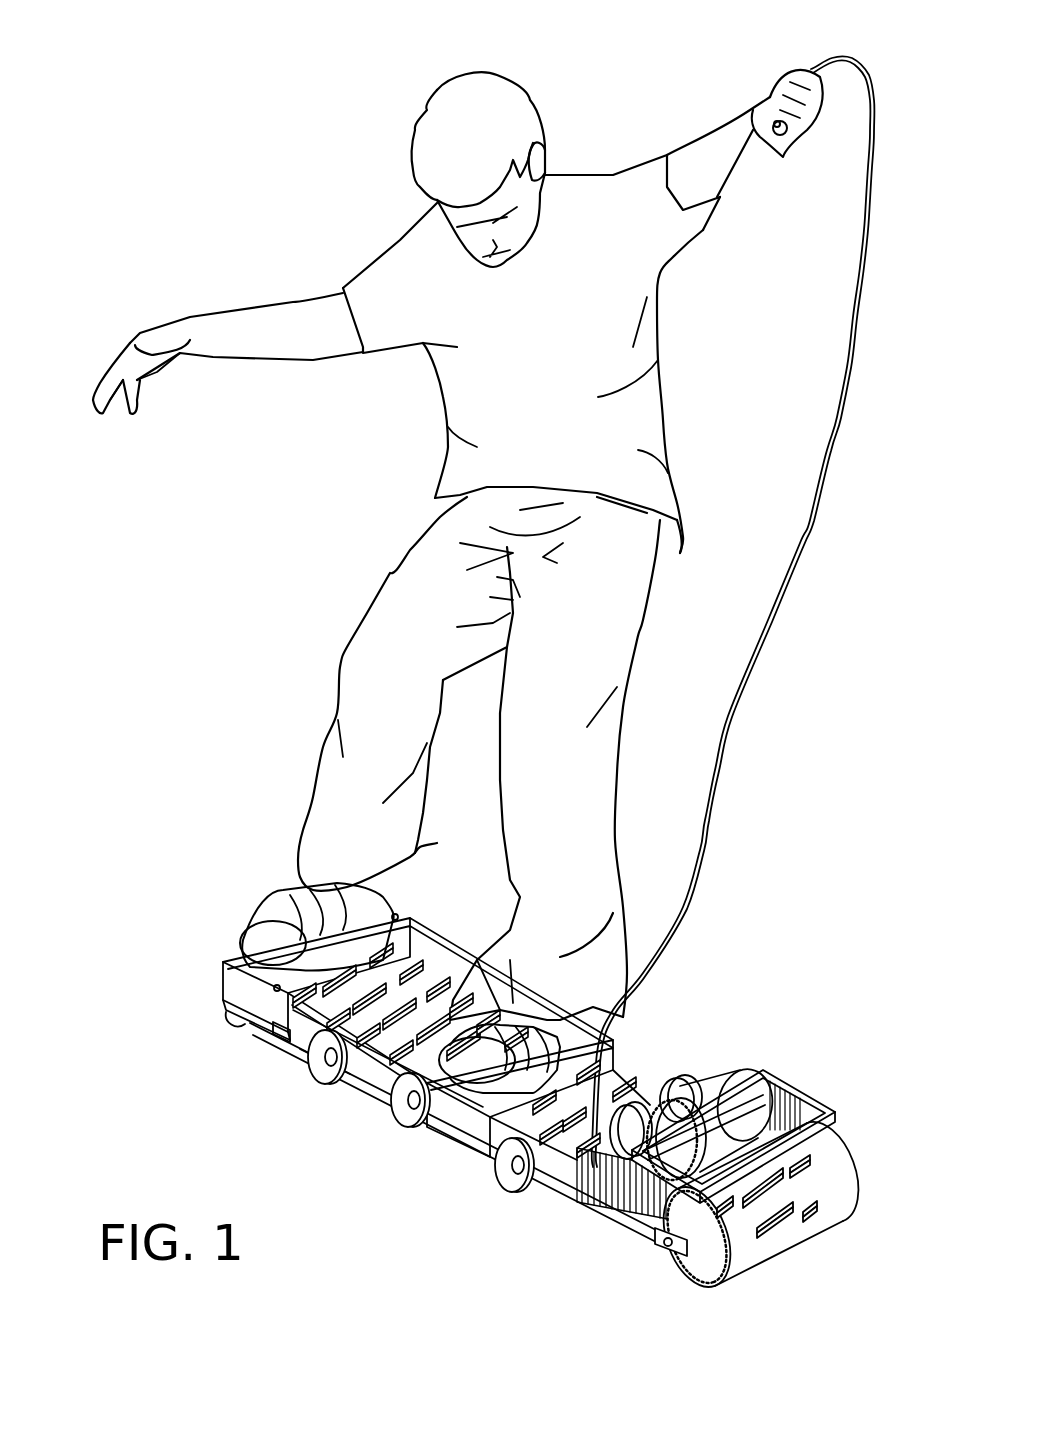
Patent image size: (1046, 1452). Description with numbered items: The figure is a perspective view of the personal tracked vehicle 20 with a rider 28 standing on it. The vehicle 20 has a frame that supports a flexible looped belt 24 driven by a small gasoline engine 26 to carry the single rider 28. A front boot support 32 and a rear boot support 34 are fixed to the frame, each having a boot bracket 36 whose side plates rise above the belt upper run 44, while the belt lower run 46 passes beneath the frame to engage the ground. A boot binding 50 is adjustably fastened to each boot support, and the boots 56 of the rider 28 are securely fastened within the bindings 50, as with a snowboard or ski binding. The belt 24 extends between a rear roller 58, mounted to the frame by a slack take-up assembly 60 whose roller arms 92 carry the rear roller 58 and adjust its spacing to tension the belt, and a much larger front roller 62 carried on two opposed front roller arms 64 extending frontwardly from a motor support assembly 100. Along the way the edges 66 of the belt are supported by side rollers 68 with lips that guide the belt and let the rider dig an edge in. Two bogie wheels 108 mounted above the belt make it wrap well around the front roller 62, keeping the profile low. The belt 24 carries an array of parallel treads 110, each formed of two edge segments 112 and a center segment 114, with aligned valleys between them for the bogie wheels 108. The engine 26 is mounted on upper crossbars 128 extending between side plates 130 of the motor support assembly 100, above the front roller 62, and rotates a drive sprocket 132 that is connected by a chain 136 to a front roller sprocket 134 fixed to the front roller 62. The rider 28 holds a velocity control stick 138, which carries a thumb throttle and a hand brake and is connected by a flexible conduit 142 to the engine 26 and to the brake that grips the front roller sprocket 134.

The personal tracked vehicle 20 is at (128, 980).
The flexible looped belt 24 is at (462, 1017).
The gasoline engine 26 is at (711, 1153).
The rider 28 is at (597, 93).
The front boot support 32 is at (462, 1140).
The rear boot support 34 is at (222, 962).
The boot bracket 36 is at (267, 1033).
The belt upper run 44 is at (437, 977).
The belt lower run 46 is at (345, 1090).
The boot binding 50 is at (417, 860).
The boots 56 is at (279, 955).
The rear roller 58 is at (262, 1032).
The slack take-up assembly 60 is at (278, 1045).
The front roller 62 is at (754, 1226).
The front roller arms 64 is at (652, 1235).
The belt edges 66 is at (630, 1105).
The side rollers 68 is at (322, 1082).
The roller arms 92 is at (250, 1022).
The motor support assembly 100 is at (775, 1072).
The bogie wheels 108 is at (678, 1082).
The treads 110 is at (367, 1032).
The edge segments 112 is at (450, 987).
The center segment 114 is at (405, 1028).
The upper crossbars 128 is at (828, 1128).
The side plates 130 is at (590, 1223).
The drive sprocket 132 is at (698, 1122).
The front roller sprocket 134 is at (675, 1270).
The chain 136 is at (760, 1232).
The velocity control stick 138 is at (780, 150).
The flexible conduit 142 is at (810, 520).